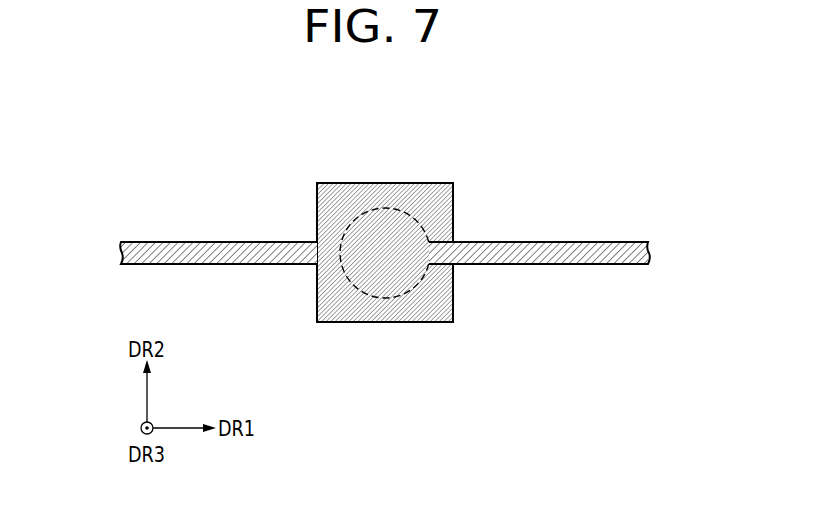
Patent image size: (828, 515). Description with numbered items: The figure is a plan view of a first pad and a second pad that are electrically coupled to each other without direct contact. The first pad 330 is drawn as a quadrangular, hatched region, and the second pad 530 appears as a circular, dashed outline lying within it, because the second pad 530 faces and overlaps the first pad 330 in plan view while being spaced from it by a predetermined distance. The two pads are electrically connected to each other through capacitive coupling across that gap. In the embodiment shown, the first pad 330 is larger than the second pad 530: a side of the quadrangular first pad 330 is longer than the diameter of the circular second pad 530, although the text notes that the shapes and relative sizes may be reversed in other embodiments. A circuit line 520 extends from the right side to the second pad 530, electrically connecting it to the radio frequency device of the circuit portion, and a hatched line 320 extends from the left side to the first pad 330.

The first signal line 320 is at (203, 252).
The first pad 330 is at (436, 197).
The circuit line 520 is at (568, 252).
The second pad 530 is at (378, 207).